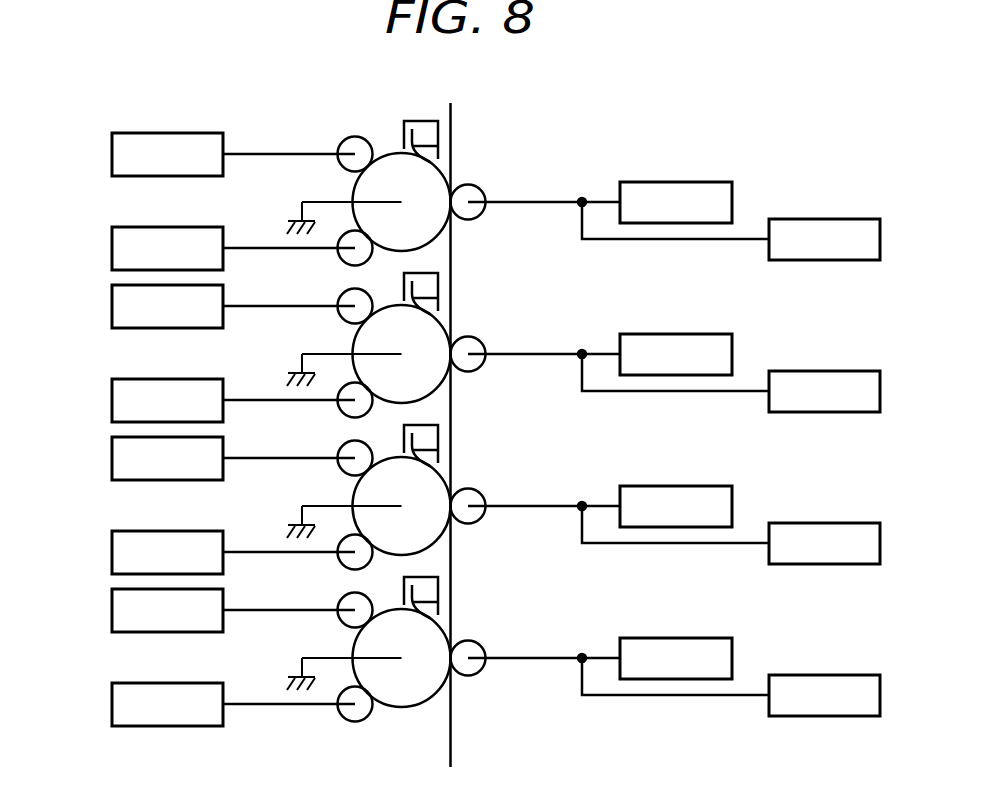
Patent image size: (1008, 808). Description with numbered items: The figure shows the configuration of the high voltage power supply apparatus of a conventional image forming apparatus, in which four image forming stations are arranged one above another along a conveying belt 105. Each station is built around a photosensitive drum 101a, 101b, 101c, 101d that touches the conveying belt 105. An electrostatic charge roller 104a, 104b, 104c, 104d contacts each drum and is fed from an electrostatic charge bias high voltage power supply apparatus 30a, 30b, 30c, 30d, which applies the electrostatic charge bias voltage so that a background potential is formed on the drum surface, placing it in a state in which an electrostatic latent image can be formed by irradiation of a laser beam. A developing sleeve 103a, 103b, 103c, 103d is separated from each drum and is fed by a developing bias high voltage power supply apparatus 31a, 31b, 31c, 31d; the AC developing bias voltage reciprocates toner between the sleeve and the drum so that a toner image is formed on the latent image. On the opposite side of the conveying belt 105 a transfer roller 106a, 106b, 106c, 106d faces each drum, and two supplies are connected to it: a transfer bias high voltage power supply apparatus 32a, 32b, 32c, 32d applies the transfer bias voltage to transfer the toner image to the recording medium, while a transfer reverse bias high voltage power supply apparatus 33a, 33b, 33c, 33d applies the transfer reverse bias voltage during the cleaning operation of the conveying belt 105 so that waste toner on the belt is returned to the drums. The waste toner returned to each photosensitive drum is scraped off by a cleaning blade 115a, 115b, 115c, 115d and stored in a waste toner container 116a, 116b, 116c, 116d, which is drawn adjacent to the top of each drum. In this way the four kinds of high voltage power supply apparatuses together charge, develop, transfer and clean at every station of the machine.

The conveying belt 105 is at (450, 118).
The electrostatic charge bias high voltage power supply apparatus 30d is at (110, 154).
The developing bias high voltage power supply apparatus 31d is at (110, 248).
The electrostatic charge roller 104d is at (343, 166).
The developing sleeve 103d is at (343, 260).
The photosensitive drum 101d is at (428, 243).
The transfer roller 106d is at (480, 215).
The waste toner container 116d is at (438, 129).
The cleaning blade 115d is at (438, 144).
The transfer bias high voltage power supply apparatus 32d is at (685, 182).
The transfer reverse bias high voltage power supply apparatus 33d is at (835, 219).
The electrostatic charge bias high voltage power supply apparatus 30c is at (195, 306).
The developing bias high voltage power supply apparatus 31c is at (195, 400).
The electrostatic charge roller 104c is at (322, 320).
The developing sleeve 103c is at (322, 420).
The photosensitive drum 101c is at (437, 360).
The transfer roller 106c is at (519, 365).
The waste toner container 116c is at (491, 288).
The cleaning blade 115c is at (495, 302).
The transfer bias high voltage power supply apparatus 32c is at (657, 329).
The transfer reverse bias high voltage power supply apparatus 33c is at (731, 366).
The electrostatic charge bias high voltage power supply apparatus 30b is at (195, 458).
The developing bias high voltage power supply apparatus 31b is at (195, 552).
The electrostatic charge roller 104b is at (322, 472).
The developing sleeve 103b is at (322, 572).
The photosensitive drum 101b is at (437, 512).
The transfer roller 106b is at (519, 517).
The waste toner container 116b is at (491, 440).
The cleaning blade 115b is at (495, 454).
The transfer bias high voltage power supply apparatus 32b is at (657, 481).
The transfer reverse bias high voltage power supply apparatus 33b is at (731, 518).
The electrostatic charge bias high voltage power supply apparatus 30a is at (195, 610).
The developing bias high voltage power supply apparatus 31a is at (195, 704).
The electrostatic charge roller 104a is at (322, 624).
The developing sleeve 103a is at (322, 724).
The photosensitive drum 101a is at (437, 664).
The transfer roller 106a is at (519, 669).
The waste toner container 116a is at (491, 592).
The cleaning blade 115a is at (495, 606).
The transfer bias high voltage power supply apparatus 32a is at (657, 633).
The transfer reverse bias high voltage power supply apparatus 33a is at (731, 670).